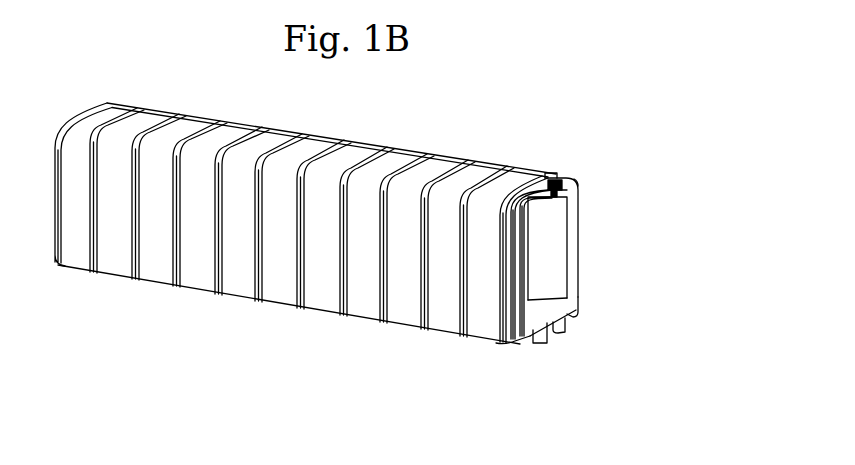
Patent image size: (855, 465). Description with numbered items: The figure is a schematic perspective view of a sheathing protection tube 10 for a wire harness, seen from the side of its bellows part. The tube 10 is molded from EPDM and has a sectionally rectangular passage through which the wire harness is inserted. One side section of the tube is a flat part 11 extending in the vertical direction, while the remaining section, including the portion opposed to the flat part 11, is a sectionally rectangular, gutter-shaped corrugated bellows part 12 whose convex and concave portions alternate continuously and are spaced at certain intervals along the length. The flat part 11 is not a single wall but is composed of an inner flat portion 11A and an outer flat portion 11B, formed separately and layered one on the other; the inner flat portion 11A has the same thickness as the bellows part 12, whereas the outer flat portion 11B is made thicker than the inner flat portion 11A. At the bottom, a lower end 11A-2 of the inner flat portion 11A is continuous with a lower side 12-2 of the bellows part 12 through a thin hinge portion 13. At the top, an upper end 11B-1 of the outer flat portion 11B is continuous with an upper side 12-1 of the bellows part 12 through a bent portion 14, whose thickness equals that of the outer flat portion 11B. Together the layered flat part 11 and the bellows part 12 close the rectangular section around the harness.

The sheathing protection tube 10 is at (80, 84).
The flat part 11 is at (708, 180).
The inner flat portion 11A is at (567, 262).
The outer flat portion 11B is at (578, 217).
The lower end of the inner flat portion 11A-2 is at (568, 308).
The upper end of the outer flat portion 11B-1 is at (588, 182).
The bellows part 12 is at (282, 265).
The upper side of the bellows part 12-1 is at (548, 172).
The lower side of the bellows part 12-2 is at (556, 328).
The thin hinge portion 13 is at (563, 313).
The bent portion 14 is at (570, 180).